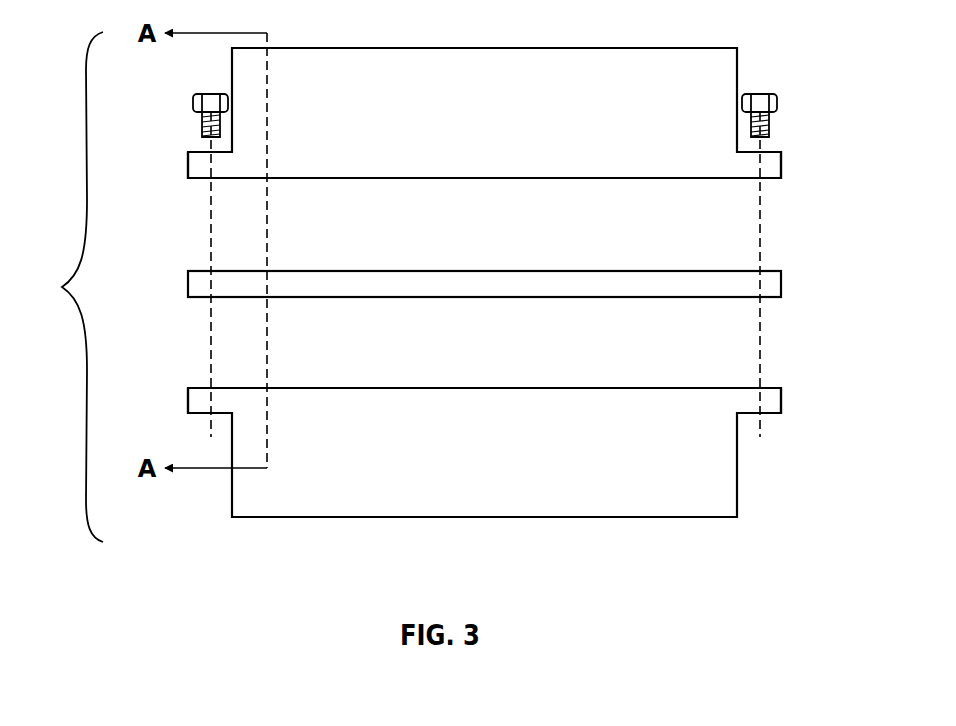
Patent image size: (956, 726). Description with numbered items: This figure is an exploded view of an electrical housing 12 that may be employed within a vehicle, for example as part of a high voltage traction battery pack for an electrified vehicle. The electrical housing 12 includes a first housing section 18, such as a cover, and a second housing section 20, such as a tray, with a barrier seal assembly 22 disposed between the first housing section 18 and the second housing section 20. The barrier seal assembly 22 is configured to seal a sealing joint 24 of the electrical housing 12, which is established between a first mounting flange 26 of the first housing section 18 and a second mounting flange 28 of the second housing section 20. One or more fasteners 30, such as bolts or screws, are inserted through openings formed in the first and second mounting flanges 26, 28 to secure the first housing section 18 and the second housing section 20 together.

The electrical housing 12 is at (66, 287).
The first housing section 18 is at (702, 63).
The second housing section 20 is at (703, 502).
The barrier seal assembly 22 is at (784, 283).
The sealing joint 24 is at (192, 383).
The first mounting flange 26 is at (193, 165).
The second mounting flange 28 is at (193, 402).
The fasteners 30 is at (212, 93).